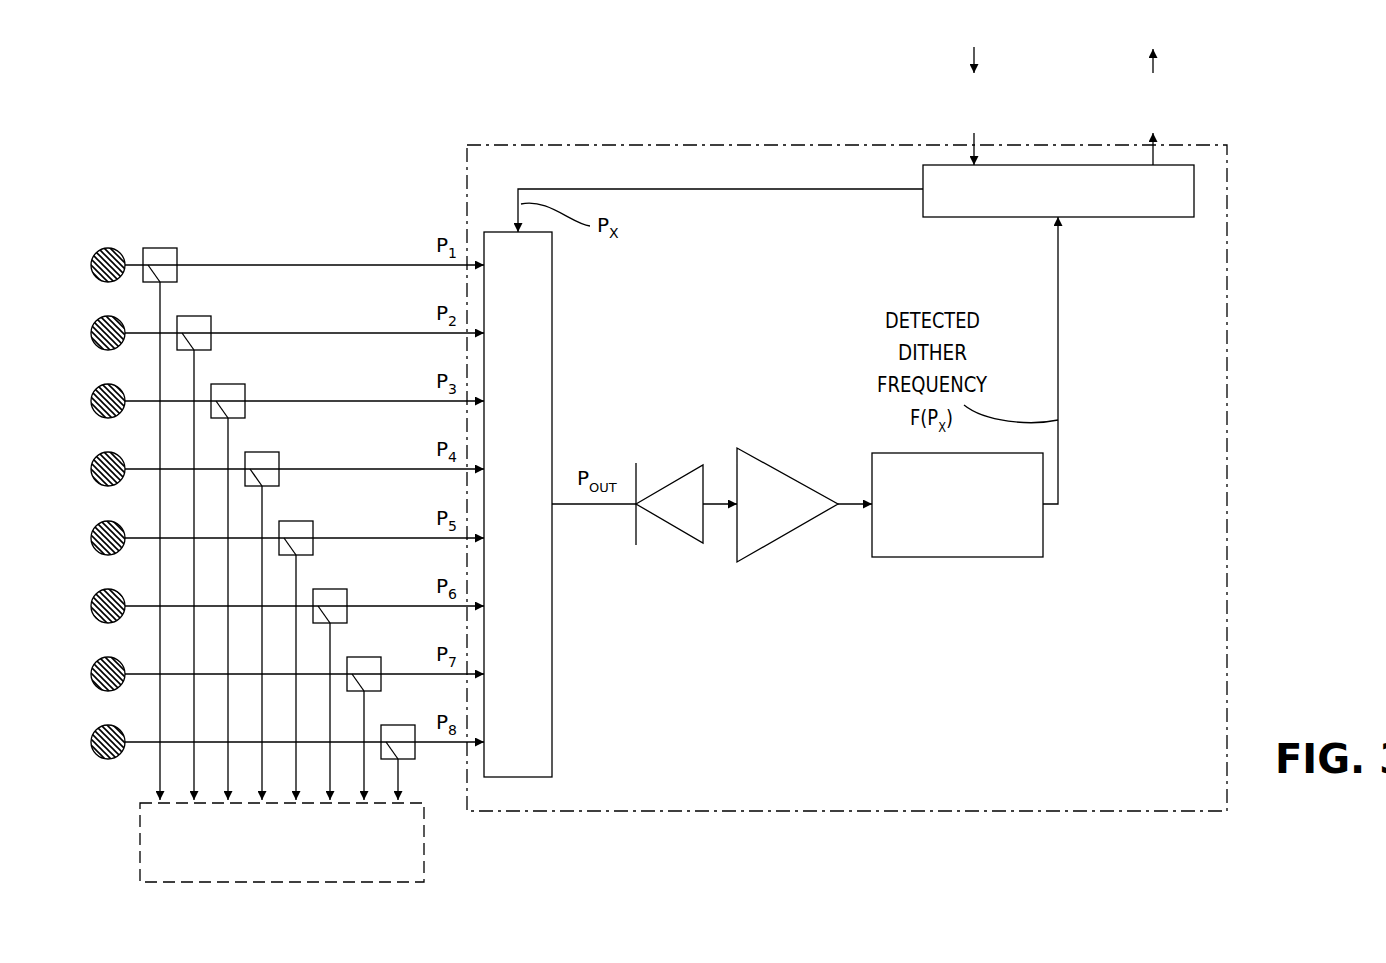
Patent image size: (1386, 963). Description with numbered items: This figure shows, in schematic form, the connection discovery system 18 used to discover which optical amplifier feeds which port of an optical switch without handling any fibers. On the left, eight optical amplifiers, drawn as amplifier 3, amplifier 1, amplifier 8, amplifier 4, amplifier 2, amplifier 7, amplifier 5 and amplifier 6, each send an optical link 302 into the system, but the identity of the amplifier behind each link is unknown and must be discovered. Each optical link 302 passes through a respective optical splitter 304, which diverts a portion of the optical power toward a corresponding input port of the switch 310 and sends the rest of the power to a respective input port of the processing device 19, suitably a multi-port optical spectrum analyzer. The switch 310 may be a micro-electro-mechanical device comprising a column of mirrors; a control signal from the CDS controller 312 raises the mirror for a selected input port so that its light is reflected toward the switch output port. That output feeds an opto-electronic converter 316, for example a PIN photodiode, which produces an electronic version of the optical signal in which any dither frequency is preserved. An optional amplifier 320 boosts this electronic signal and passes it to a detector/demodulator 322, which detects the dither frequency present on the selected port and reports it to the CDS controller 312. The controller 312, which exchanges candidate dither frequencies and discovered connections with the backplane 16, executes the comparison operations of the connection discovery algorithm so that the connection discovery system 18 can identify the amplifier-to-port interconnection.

The optical amplifier A3 3 is at (92, 258).
The optical amplifier A1 1 is at (92, 326).
The optical amplifier A8 8 is at (92, 394).
The optical amplifier A4 4 is at (92, 462).
The optical amplifier A2 2 is at (92, 531).
The optical amplifier A7 7 is at (92, 599).
The optical amplifier A5 5 is at (92, 667).
The optical amplifier A6 6 is at (92, 735).
The optical link 302 is at (323, 265).
The optical splitter 304 is at (169, 248).
The switch 310 is at (497, 519).
The opto-electronic converter 316 is at (678, 488).
The amplifier 320 is at (749, 488).
The detector/demodulator 322 is at (975, 547).
The CDS controller 312 is at (1165, 205).
The processing device 19 is at (322, 872).
The connection discovery system 18 is at (1204, 791).
The backplane 16 is at (1041, 90).